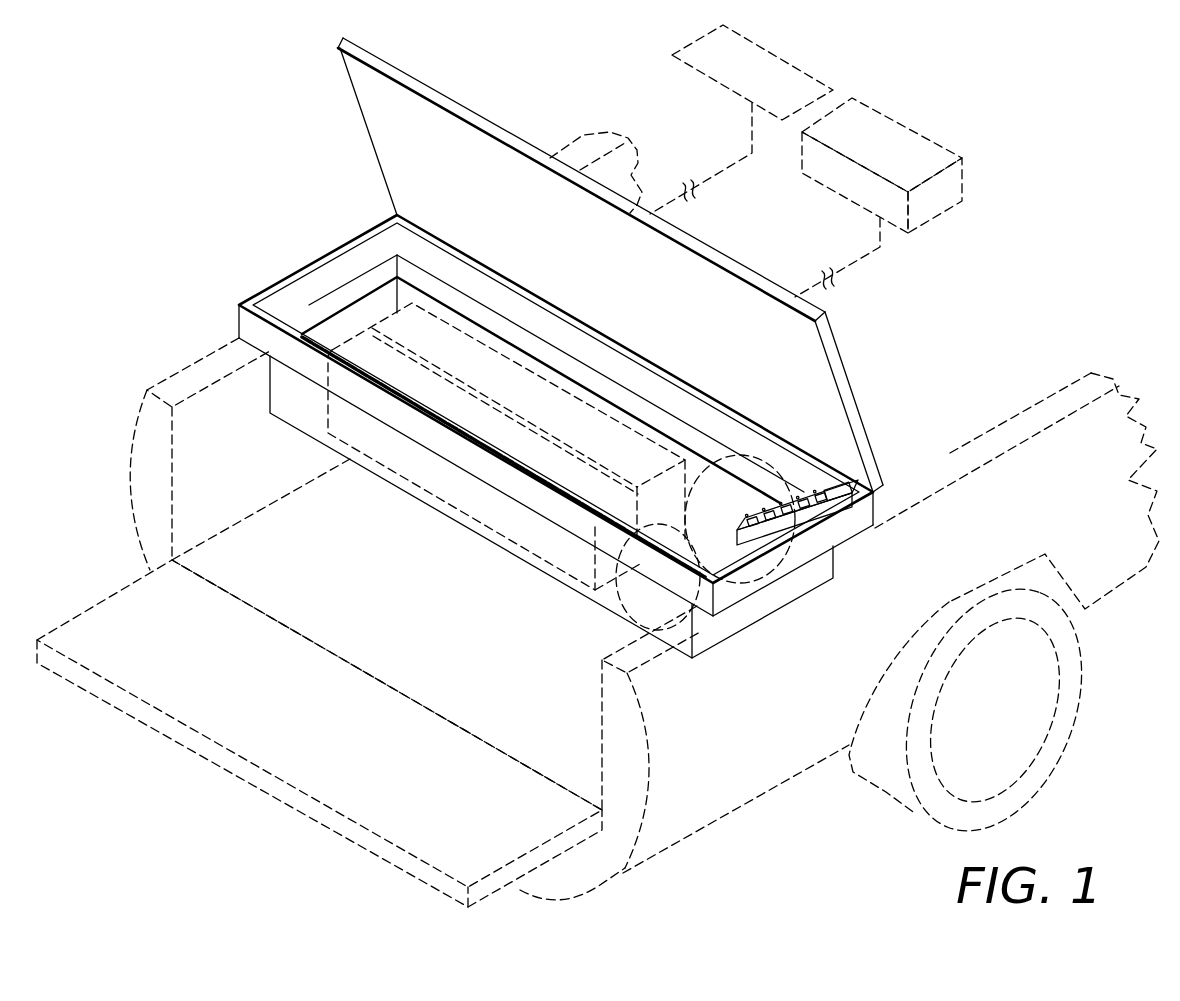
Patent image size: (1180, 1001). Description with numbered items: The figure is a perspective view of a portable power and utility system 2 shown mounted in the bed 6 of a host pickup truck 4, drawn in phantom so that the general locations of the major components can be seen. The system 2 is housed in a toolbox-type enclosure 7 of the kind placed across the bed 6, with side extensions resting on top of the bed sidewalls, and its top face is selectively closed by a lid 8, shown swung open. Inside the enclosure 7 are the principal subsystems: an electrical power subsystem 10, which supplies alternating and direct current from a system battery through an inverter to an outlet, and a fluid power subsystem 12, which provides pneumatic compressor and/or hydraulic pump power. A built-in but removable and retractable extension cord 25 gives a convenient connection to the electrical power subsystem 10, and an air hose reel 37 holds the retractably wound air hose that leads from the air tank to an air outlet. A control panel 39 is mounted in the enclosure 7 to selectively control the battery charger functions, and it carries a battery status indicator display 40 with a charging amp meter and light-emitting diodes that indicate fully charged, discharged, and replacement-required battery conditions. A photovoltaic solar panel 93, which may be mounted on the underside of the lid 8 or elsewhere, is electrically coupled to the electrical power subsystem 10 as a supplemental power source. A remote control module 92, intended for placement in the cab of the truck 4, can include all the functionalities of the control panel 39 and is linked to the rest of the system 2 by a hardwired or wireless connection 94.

The power and utility system 2 is at (222, 96).
The pickup truck 4 is at (1091, 373).
The bed 6 is at (147, 390).
The toolbox-type enclosure 7 is at (238, 306).
The lid 8 is at (406, 137).
The electrical power subsystem 10 is at (541, 406).
The fluid power subsystem 12 is at (485, 429).
The extension cord 25 is at (642, 618).
The air hose reel 37 is at (782, 438).
The control panel 39 is at (835, 480).
The battery status indicator display 40 is at (848, 476).
The remote control module 92 is at (902, 164).
The photovoltaic solar panel 93 is at (776, 91).
The hardwired or wireless connection 94 is at (862, 256).